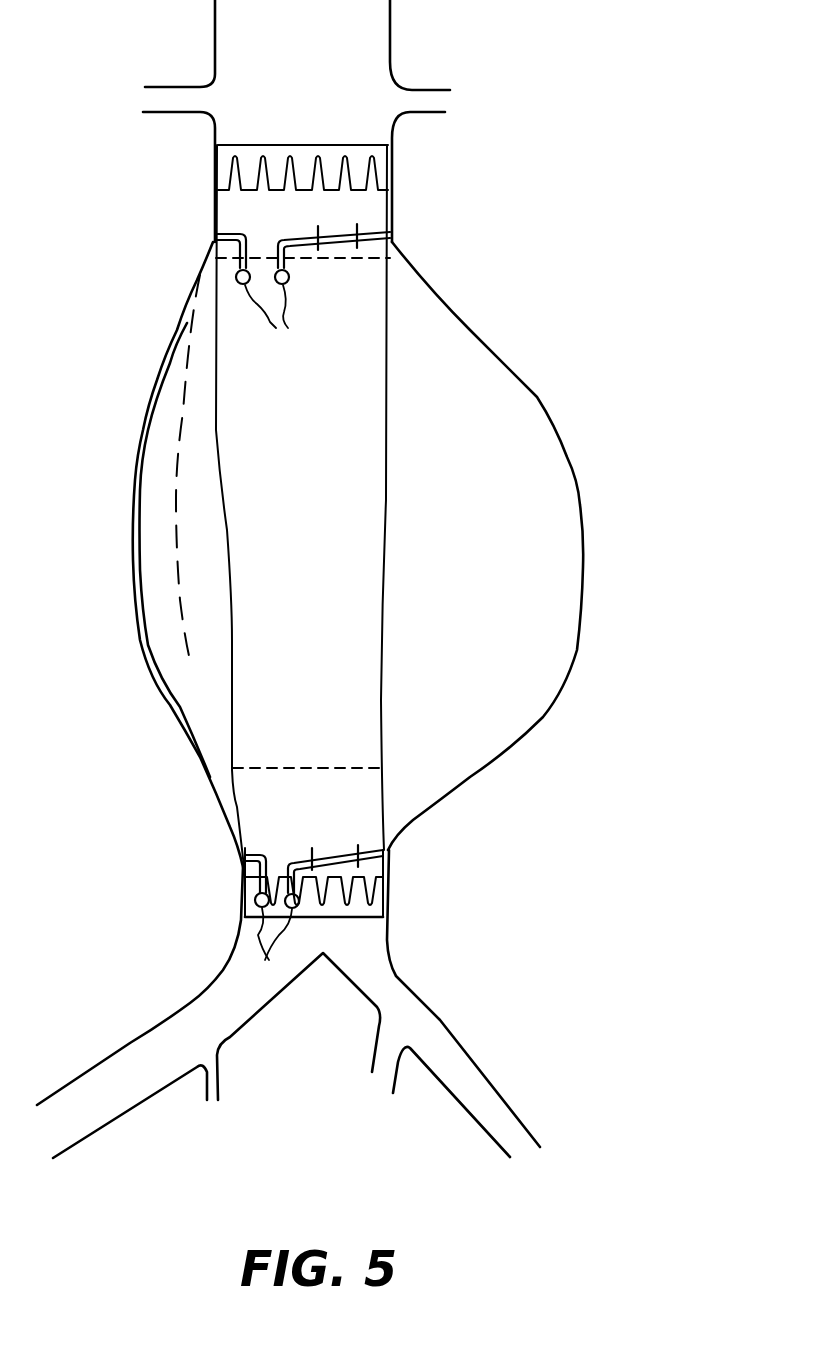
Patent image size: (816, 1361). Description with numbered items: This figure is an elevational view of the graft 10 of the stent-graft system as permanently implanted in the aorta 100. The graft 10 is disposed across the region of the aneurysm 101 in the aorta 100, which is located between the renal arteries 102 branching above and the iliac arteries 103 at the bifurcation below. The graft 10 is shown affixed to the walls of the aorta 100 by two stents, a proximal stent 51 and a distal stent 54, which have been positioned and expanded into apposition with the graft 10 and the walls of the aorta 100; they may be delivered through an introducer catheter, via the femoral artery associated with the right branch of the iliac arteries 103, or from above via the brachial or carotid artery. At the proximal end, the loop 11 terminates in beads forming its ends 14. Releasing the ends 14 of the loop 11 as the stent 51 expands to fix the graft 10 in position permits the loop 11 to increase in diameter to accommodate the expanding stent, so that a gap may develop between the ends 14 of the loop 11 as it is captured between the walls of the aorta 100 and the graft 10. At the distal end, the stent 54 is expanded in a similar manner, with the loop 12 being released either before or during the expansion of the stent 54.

The graft 10 is at (322, 514).
The loop 11 is at (397, 240).
The loop 12 is at (258, 853).
The beads 14 is at (287, 639).
The stent 51 is at (303, 144).
The stent 54 is at (370, 910).
The aorta 100 is at (392, 16).
The aneurysm 101 is at (583, 507).
The renal arteries 102 is at (446, 114).
The iliac arteries 103 is at (290, 992).